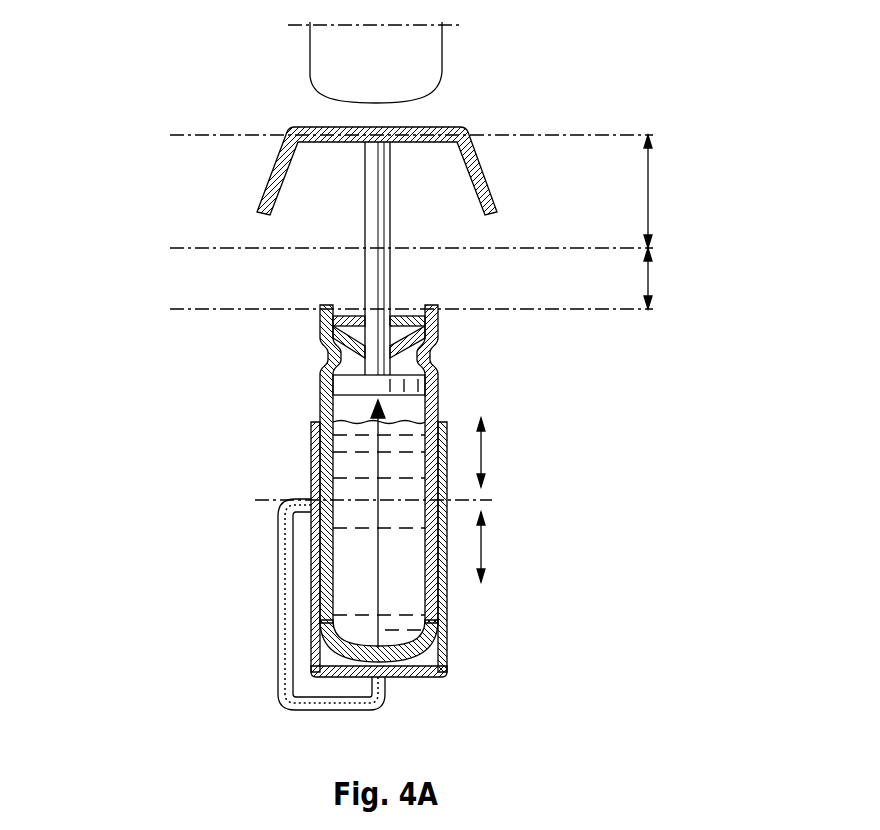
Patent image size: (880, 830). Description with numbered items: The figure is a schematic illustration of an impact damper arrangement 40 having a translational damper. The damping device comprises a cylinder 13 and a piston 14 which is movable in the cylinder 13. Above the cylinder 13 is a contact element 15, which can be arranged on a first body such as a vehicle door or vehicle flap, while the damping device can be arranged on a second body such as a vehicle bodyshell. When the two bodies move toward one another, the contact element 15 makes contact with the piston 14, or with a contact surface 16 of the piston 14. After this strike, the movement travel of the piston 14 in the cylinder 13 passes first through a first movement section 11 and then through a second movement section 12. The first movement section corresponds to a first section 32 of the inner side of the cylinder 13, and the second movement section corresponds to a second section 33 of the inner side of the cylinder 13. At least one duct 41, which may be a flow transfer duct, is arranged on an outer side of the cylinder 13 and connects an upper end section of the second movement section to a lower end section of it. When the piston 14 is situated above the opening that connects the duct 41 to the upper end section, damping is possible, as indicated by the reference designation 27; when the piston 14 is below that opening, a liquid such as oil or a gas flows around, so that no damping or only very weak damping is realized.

The impact damper arrangement 40 is at (116, 44).
The contact element 15 is at (420, 46).
The contact surface 16 is at (455, 127).
The first movement section 11 is at (648, 190).
The second movement section 12 is at (648, 280).
The cylinder 13 is at (440, 405).
The piston 14 is at (355, 384).
The damping 27 is at (430, 628).
The first section 32 is at (481, 455).
The second section 33 is at (481, 548).
The duct 41 is at (278, 592).